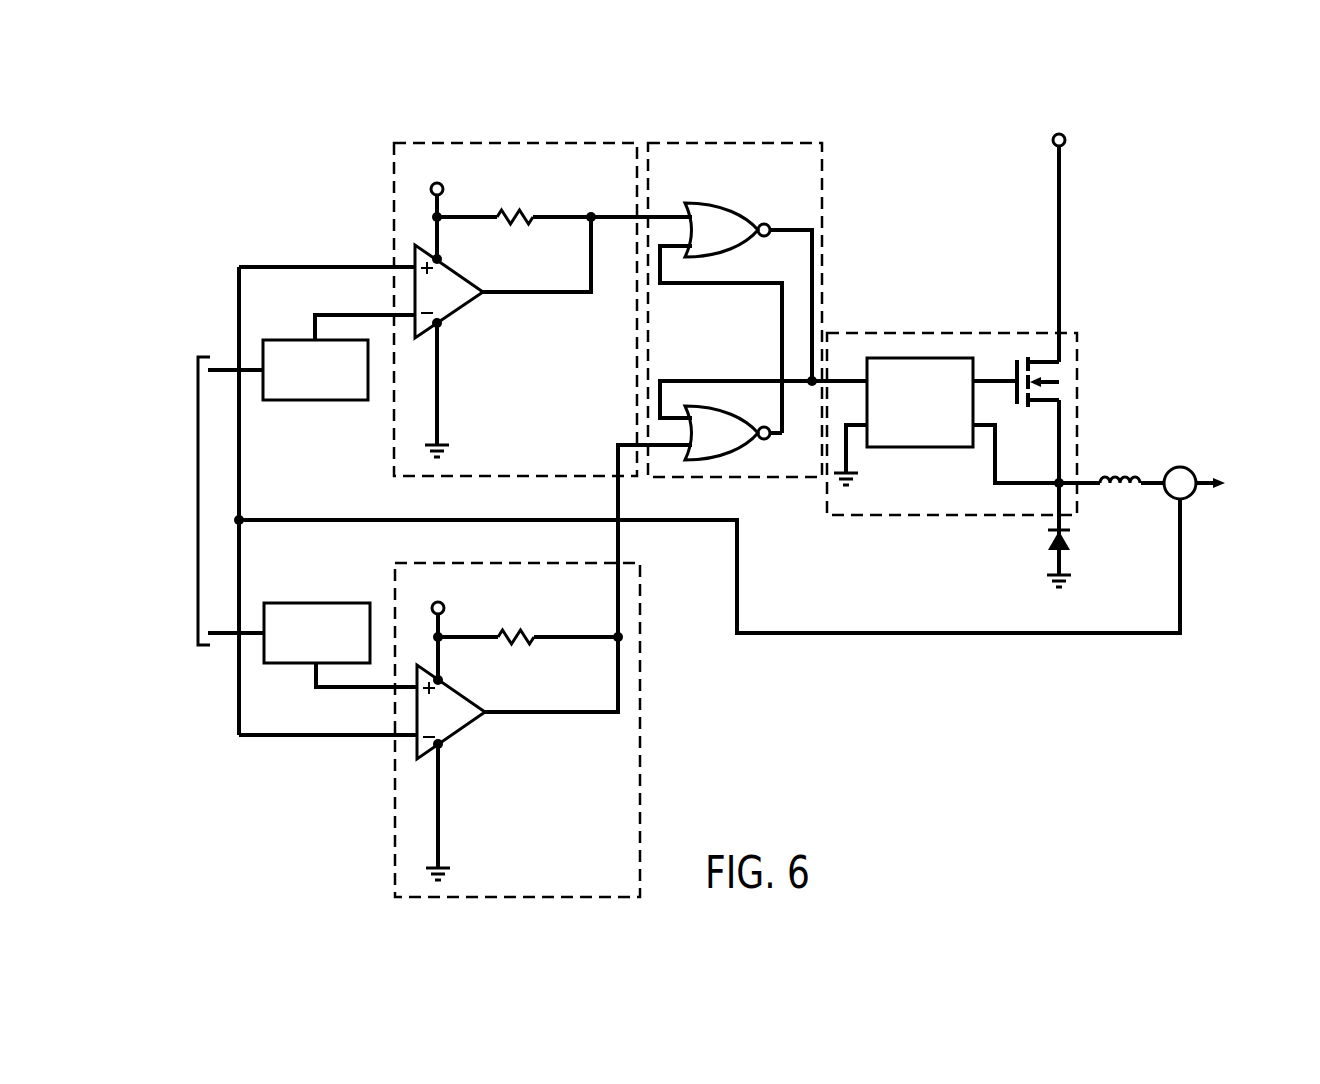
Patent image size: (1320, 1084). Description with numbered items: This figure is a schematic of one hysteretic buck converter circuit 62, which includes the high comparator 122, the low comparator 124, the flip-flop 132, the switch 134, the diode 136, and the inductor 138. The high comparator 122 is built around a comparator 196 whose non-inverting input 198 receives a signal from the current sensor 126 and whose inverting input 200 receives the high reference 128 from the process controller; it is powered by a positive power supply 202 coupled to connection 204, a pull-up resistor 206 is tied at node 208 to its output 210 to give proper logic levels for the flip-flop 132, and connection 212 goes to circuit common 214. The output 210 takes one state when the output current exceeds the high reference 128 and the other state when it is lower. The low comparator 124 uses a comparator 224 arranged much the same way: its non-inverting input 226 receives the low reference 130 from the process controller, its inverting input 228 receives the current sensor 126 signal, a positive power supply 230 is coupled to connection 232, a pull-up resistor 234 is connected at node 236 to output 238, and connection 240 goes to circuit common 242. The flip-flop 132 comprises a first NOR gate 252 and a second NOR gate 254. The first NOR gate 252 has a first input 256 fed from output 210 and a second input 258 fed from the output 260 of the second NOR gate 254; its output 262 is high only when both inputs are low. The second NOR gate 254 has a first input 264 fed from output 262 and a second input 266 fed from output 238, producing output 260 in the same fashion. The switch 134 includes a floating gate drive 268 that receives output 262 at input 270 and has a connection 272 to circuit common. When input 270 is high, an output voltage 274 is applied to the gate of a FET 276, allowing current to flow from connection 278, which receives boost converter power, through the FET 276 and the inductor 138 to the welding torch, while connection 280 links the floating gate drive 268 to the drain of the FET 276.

The hysteretic buck converter circuit 62 is at (192, 155).
The high comparator 122 is at (393, 463).
The low comparator 124 is at (393, 885).
The current sensor 126 is at (1188, 470).
The high reference 128 is at (290, 340).
The low reference 130 is at (290, 603).
The flip-flop 132 is at (738, 144).
The switch 134 is at (951, 333).
The diode 136 is at (1068, 537).
The inductor 138 is at (1115, 477).
The comparator 196 is at (432, 243).
The non-inverting input 198 is at (416, 258).
The inverting input 200 is at (427, 312).
The positive power supply 202 is at (444, 193).
The connection 204 is at (448, 283).
The pull-up resistor 206 is at (520, 212).
The output node 208 is at (592, 212).
The output 210 is at (541, 293).
The connection 212 is at (441, 328).
The circuit common 214 is at (435, 436).
The comparator 224 is at (428, 760).
The non-inverting input 226 is at (418, 700).
The inverting input 228 is at (418, 747).
The positive power supply 230 is at (445, 612).
The connection 232 is at (448, 690).
The pull-up resistor 234 is at (521, 632).
The output node 236 is at (613, 633).
The output 238 is at (545, 713).
The connection 240 is at (441, 748).
The circuit common 242 is at (437, 856).
The first NOR gate 252 is at (728, 212).
The second NOR gate 254 is at (727, 455).
The first input 256 is at (692, 205).
The second input 258 is at (706, 255).
The output 260 is at (768, 442).
The output 262 is at (769, 226).
The first input 264 is at (707, 410).
The second input 266 is at (695, 457).
The floating gate drive 268 is at (915, 358).
The input 270 is at (865, 380).
The connection 272 is at (865, 430).
The output voltage 274 is at (995, 378).
The FET 276 is at (1063, 392).
The connection 278 is at (1064, 145).
The connection 280 is at (992, 457).